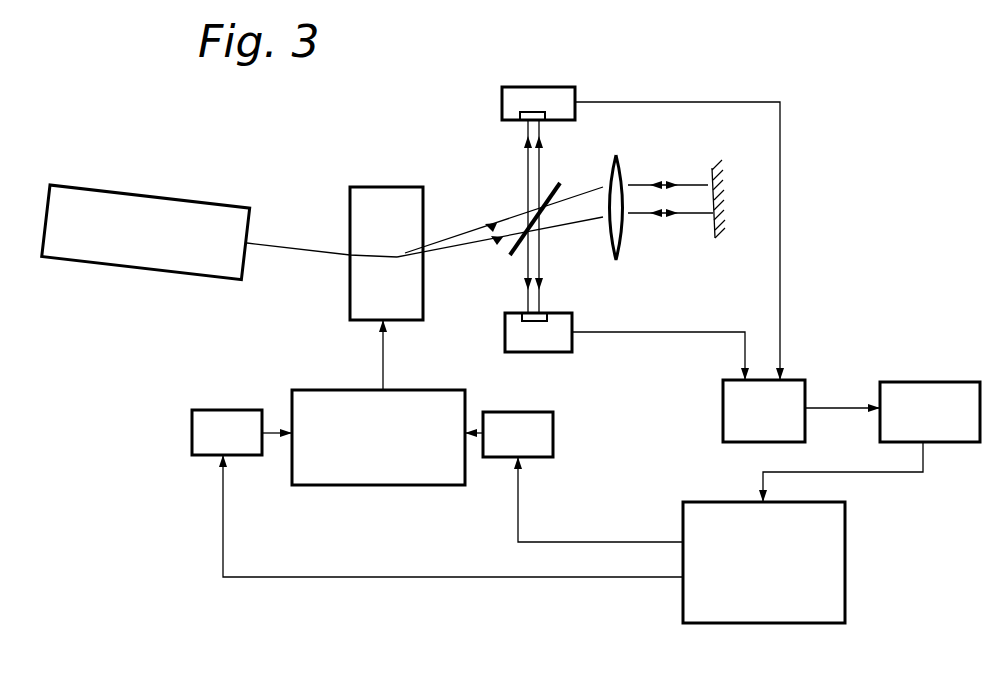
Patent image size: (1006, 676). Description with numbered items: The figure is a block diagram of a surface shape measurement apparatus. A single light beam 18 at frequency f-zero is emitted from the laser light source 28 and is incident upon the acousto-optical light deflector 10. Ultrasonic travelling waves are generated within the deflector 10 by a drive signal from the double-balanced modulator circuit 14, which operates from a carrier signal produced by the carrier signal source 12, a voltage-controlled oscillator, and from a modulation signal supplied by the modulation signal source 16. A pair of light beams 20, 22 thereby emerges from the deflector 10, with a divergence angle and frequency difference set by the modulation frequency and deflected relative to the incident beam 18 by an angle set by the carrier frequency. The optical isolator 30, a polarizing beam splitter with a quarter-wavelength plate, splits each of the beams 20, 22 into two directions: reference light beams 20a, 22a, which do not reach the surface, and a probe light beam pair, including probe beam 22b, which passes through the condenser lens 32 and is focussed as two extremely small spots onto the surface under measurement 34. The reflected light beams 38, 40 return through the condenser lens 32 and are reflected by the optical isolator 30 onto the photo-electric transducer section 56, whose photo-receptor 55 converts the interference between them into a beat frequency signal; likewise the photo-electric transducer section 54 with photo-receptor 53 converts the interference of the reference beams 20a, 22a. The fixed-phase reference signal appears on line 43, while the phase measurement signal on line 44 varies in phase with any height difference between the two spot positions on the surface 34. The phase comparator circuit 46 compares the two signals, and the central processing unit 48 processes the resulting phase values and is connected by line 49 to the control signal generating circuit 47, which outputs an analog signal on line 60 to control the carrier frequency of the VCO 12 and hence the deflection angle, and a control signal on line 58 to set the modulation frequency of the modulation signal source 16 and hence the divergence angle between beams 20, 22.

The acousto-optical light deflector 10 is at (390, 189).
The carrier signal source 12 is at (215, 410).
The double-balanced modulator circuit 14 is at (337, 390).
The modulation signal source 16 is at (543, 412).
The laser light beam 18 is at (281, 243).
The light beam 20 is at (461, 246).
The reference light beam 20a is at (527, 173).
The light beam 22 is at (457, 235).
The reference light beam 22a is at (545, 166).
The probe light beam 22b is at (695, 185).
The laser light source 28 is at (145, 192).
The optical isolator 30 is at (560, 185).
The condenser lens 32 is at (623, 163).
The surface under measurement 34 is at (716, 171).
The reflected light beam 38 is at (530, 258).
The reflected light beam 40 is at (542, 295).
The line 43 is at (781, 238).
The line 44 is at (745, 363).
The phase comparator circuit 46 is at (794, 380).
The control signal generating circuit 47 is at (845, 552).
The central processing unit 48 is at (925, 382).
The control line 49 is at (913, 473).
The photo-receptor 53 is at (518, 112).
The photo-electric transducer section 54 is at (548, 87).
The photo-receptor 55 is at (522, 318).
The photo-electric transducer section 56 is at (525, 353).
The line 58 is at (610, 541).
The output line 60 is at (610, 578).